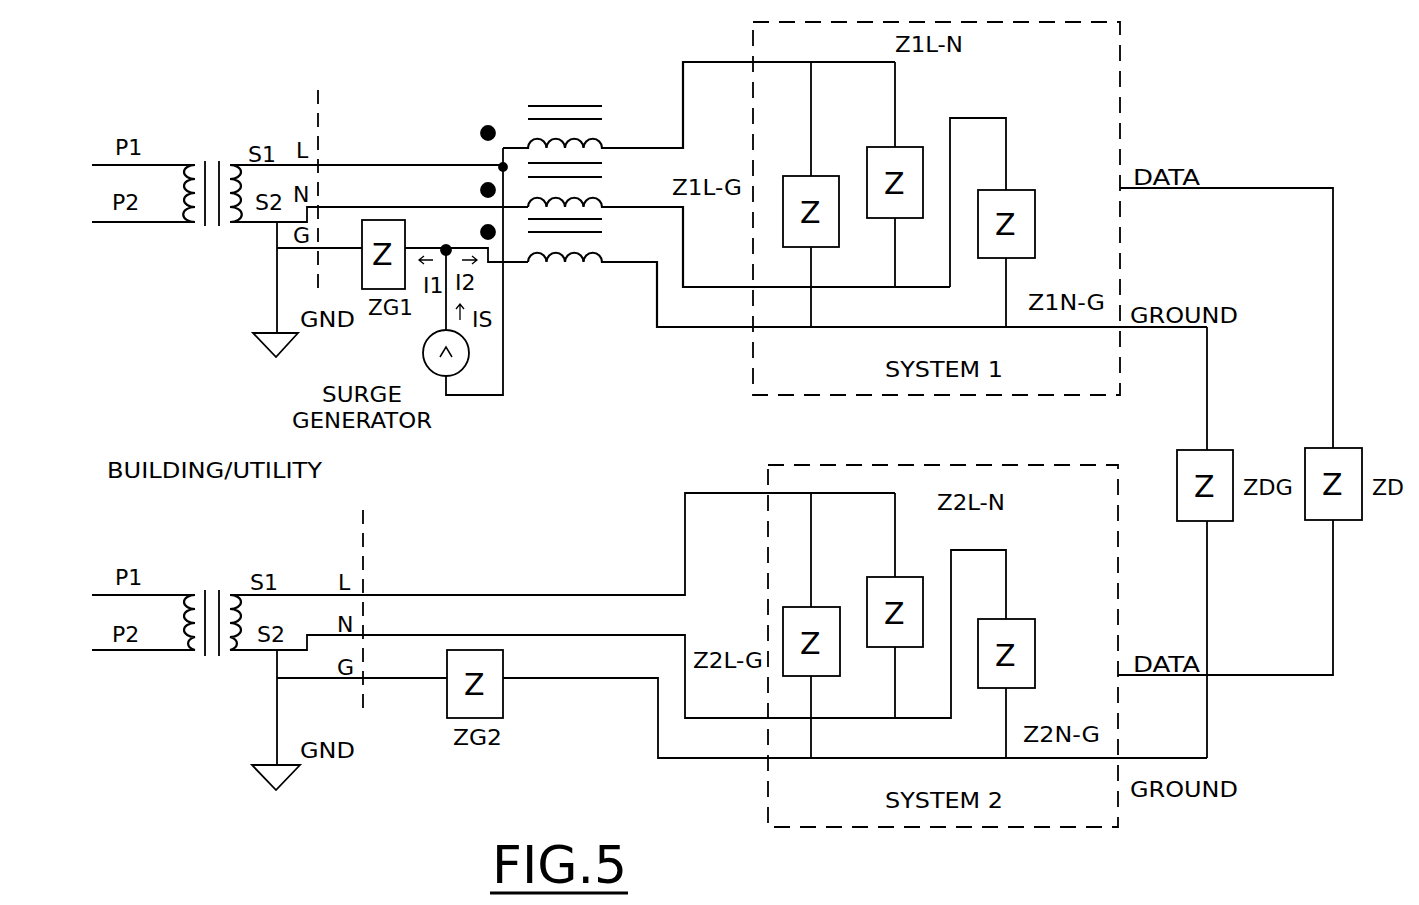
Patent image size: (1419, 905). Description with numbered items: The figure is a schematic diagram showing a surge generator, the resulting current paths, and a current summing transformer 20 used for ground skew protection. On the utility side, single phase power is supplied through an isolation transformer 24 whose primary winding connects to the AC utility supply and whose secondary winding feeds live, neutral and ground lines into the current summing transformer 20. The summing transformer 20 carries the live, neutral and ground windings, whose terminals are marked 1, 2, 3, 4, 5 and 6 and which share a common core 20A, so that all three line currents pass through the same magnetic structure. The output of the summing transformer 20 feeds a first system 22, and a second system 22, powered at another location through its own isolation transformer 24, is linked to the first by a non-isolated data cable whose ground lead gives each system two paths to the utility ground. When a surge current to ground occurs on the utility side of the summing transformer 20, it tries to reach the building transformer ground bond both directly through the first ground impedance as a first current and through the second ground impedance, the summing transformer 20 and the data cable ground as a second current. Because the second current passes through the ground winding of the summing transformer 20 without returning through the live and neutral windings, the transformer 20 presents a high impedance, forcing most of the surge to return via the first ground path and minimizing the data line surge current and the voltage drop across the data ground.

The primary winding terminal 1 is at (699, 106).
The primary winding terminal 2 is at (699, 106).
The secondary winding terminal 3 is at (732, 233).
The secondary winding terminal 4 is at (732, 233).
The secondary winding terminal 5 is at (860, 273).
The secondary winding terminal 6 is at (860, 273).
The current summing transformer 20 is at (844, 187).
The transformer core 20A is at (585, 104).
The system 22 is at (1151, 73).
The isolation transformer 24 is at (213, 156).